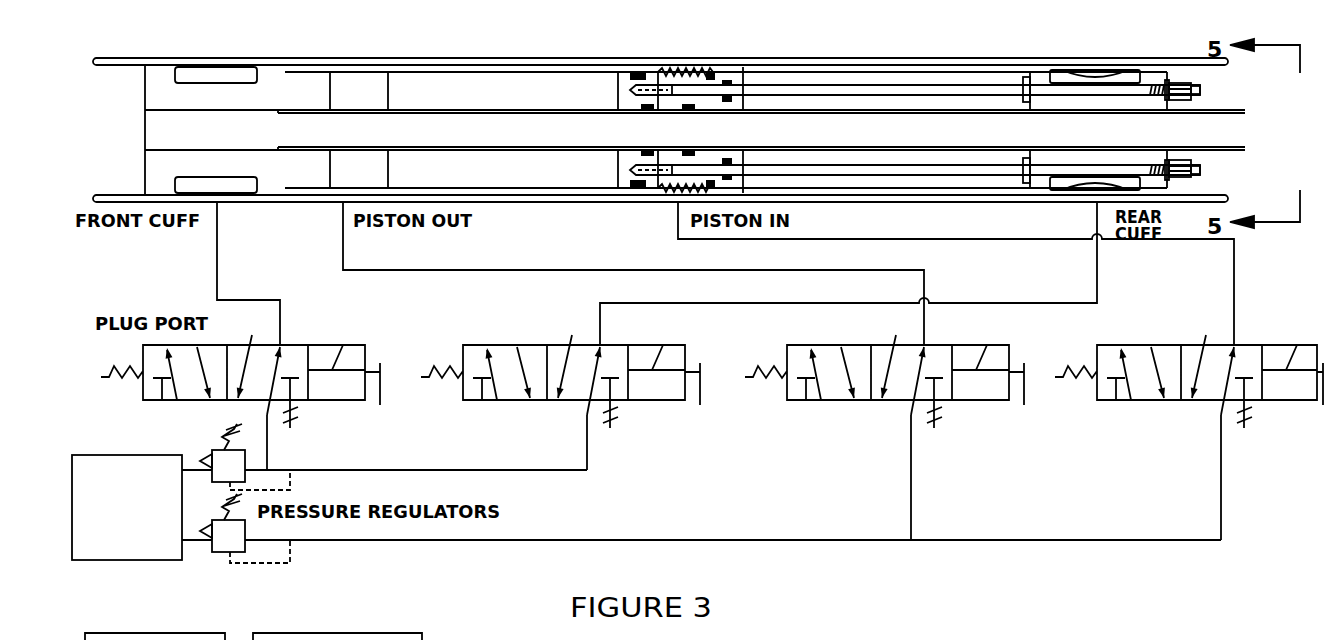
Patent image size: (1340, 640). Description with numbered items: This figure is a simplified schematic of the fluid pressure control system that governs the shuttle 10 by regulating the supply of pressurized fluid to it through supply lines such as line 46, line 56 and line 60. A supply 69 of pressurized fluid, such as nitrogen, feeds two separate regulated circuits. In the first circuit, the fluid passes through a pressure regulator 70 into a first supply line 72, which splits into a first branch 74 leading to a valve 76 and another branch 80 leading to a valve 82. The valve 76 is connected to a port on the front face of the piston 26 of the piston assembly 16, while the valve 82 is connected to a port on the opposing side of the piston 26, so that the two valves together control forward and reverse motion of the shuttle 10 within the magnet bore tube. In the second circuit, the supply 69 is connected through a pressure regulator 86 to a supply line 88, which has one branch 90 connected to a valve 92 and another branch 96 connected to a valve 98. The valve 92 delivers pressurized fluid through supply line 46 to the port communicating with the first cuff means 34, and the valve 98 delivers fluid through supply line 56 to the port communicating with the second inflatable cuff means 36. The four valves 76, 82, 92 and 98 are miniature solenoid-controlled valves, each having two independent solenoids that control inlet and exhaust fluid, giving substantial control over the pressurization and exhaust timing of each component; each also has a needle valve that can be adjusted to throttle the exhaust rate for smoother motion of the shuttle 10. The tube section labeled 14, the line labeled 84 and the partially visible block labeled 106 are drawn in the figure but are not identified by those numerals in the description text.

The shuttle 10 is at (488, 50).
The outer tube 14 is at (863, 58).
The piston assembly 16 is at (748, 82).
The piston 26 is at (650, 68).
The first cuff means 34 is at (268, 64).
The second inflatable cuff means 36 is at (1102, 70).
The supply line 46 is at (248, 300).
The supply line 56 is at (993, 303).
The supply line 60 is at (533, 270).
The supply of pressurized fluid 69 is at (123, 455).
The pressure regulator 70 is at (215, 553).
The first supply line 72 is at (528, 540).
The first branch 74 is at (911, 462).
The valve 76 is at (970, 347).
The branch 80 is at (1108, 542).
The valve 82 is at (1277, 347).
The piston in pressure line 84 is at (930, 238).
The pressure regulator 86 is at (223, 484).
The supply line 88 is at (363, 470).
The branch 90 is at (267, 451).
The valve 92 is at (328, 345).
The branch 96 is at (588, 448).
The valve 98 is at (648, 345).
The control unit 106 is at (412, 633).